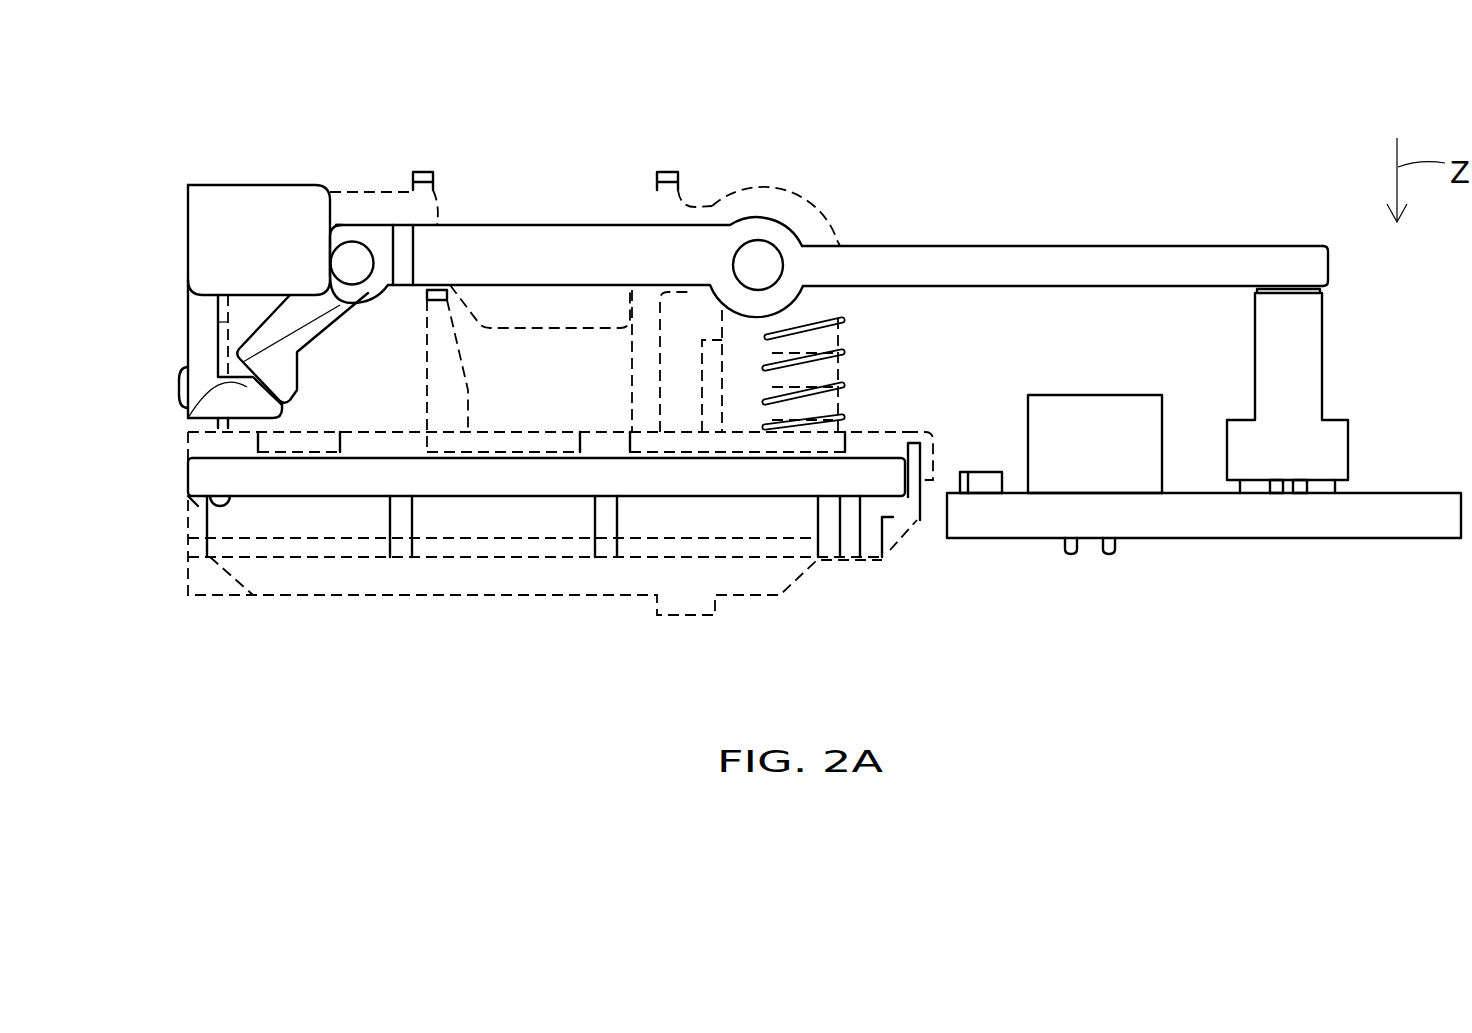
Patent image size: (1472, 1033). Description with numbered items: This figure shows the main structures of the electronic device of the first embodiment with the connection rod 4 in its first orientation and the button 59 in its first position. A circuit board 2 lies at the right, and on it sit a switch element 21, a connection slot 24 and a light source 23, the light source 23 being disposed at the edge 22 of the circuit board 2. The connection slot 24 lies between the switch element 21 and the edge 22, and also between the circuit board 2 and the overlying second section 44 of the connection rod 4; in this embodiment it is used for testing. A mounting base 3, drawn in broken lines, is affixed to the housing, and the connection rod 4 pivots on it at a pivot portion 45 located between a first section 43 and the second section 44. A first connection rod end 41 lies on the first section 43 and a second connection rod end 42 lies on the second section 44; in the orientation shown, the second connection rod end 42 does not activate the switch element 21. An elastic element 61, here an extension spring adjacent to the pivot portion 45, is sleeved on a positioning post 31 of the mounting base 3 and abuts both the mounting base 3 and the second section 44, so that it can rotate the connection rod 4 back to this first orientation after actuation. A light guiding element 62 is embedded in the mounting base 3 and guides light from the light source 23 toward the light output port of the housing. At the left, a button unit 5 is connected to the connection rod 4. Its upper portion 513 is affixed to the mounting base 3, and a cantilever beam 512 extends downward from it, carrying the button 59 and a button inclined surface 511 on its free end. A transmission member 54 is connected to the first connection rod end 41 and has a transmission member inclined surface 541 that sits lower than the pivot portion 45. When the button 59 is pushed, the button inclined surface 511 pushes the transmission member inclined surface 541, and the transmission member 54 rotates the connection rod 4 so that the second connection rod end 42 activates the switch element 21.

The circuit board 2 is at (1380, 520).
The switch element 21 is at (1297, 387).
The edge 22 is at (950, 518).
The light source 23 is at (983, 483).
The connection slot 24 is at (1103, 448).
The mounting base 3 is at (345, 545).
The positioning post 31 is at (818, 403).
The connection rod 4 is at (829, 226).
The first connection rod end 41 is at (382, 247).
The second connection rod end 42 is at (1292, 263).
The first section 43 is at (573, 263).
The second section 44 is at (1142, 263).
The pivot portion 45 is at (758, 263).
The button unit 5 is at (182, 235).
The button inclined surface 511 is at (188, 418).
The cantilever beam 512 is at (202, 327).
The upper portion 513 is at (215, 220).
The transmission member 54 is at (276, 330).
The transmission member inclined surface 541 is at (348, 252).
The button 59 is at (180, 388).
The elastic element 61 is at (787, 432).
The light guiding element 62 is at (505, 480).